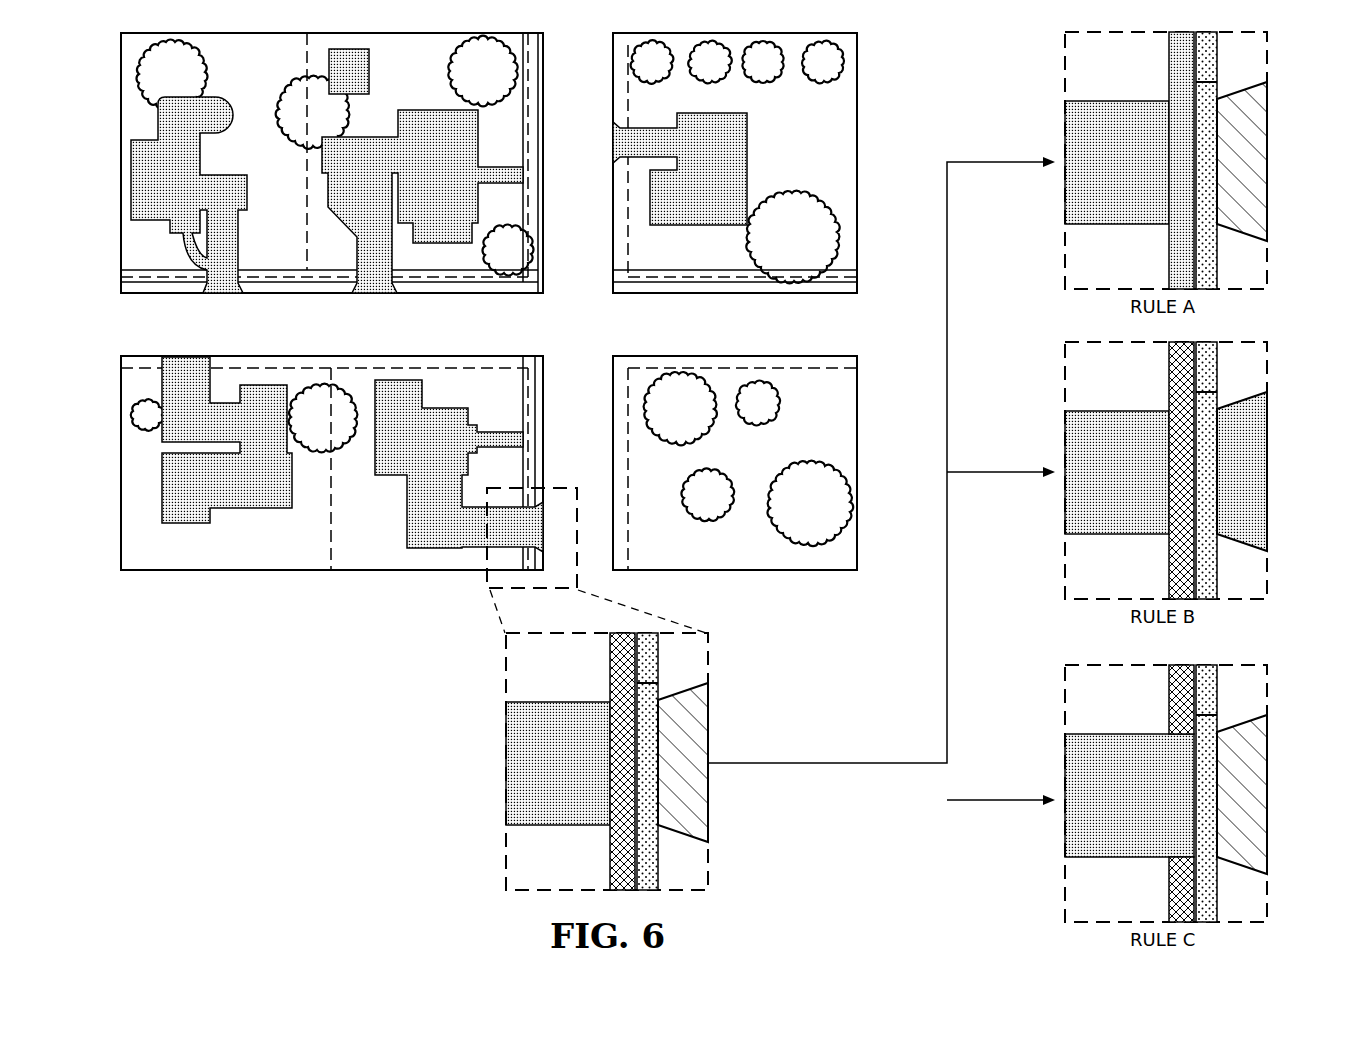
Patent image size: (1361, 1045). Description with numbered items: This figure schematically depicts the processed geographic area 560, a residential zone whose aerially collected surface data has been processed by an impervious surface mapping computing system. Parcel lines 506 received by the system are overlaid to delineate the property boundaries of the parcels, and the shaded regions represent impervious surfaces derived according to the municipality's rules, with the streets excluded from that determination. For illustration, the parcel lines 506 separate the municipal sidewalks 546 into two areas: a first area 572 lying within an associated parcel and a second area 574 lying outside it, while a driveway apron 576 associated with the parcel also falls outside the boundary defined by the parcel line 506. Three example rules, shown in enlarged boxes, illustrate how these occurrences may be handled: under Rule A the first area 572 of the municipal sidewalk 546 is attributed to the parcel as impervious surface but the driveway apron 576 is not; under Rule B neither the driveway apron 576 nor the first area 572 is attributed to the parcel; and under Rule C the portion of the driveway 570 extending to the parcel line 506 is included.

The parcel lines 506 is at (178, 278).
The municipal sidewalks 546 is at (681, 612).
The processed geographic area 560 is at (862, 102).
The driveway 570 is at (370, 70).
The first area 572 is at (620, 847).
The second area 574 is at (650, 855).
The driveway apron 576 is at (700, 800).